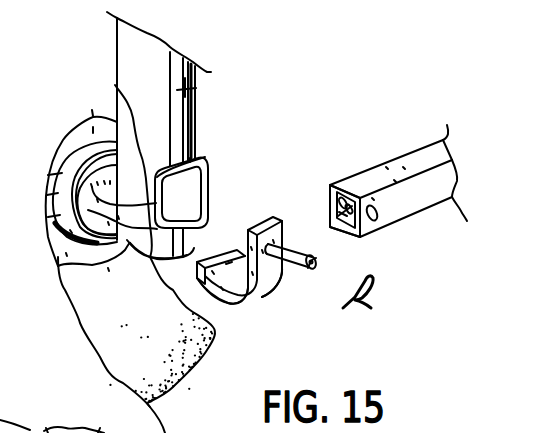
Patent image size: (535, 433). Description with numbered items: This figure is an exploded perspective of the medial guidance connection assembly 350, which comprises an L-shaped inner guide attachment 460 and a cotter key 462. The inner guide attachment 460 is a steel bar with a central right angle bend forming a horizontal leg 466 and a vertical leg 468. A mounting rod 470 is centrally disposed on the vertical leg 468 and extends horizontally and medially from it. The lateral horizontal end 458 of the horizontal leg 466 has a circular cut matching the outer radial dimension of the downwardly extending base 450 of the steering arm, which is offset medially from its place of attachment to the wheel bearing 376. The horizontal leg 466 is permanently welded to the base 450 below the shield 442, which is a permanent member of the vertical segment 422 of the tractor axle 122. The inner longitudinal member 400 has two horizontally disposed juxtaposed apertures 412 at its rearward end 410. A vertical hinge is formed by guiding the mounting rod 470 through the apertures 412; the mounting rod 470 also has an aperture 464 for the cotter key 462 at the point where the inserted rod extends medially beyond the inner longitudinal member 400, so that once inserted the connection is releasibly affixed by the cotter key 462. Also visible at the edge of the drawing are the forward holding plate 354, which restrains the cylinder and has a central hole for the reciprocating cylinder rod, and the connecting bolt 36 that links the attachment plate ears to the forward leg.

The tractor axle 122 is at (117, 57).
The vertical segment 422 is at (196, 88).
The downwardly extending base 450 is at (115, 85).
The shield 442 is at (202, 173).
The wheel bearing 376 is at (60, 172).
The lateral horizontal end 458 is at (213, 264).
The horizontal leg 466 is at (210, 288).
The vertical leg 468 is at (252, 306).
The inner guide attachment 460 is at (280, 270).
The aperture 464 is at (308, 254).
The mounting rod 470 is at (310, 270).
The inner longitudinal member 400 is at (415, 161).
The rearward end 410 is at (349, 183).
The apertures 412 is at (375, 216).
The cotter key 462 is at (368, 297).
The medial guidance connection assembly 350 is at (385, 313).
The forward holding plate 354 is at (72, 428).
The bolt 36 is at (15, 415).